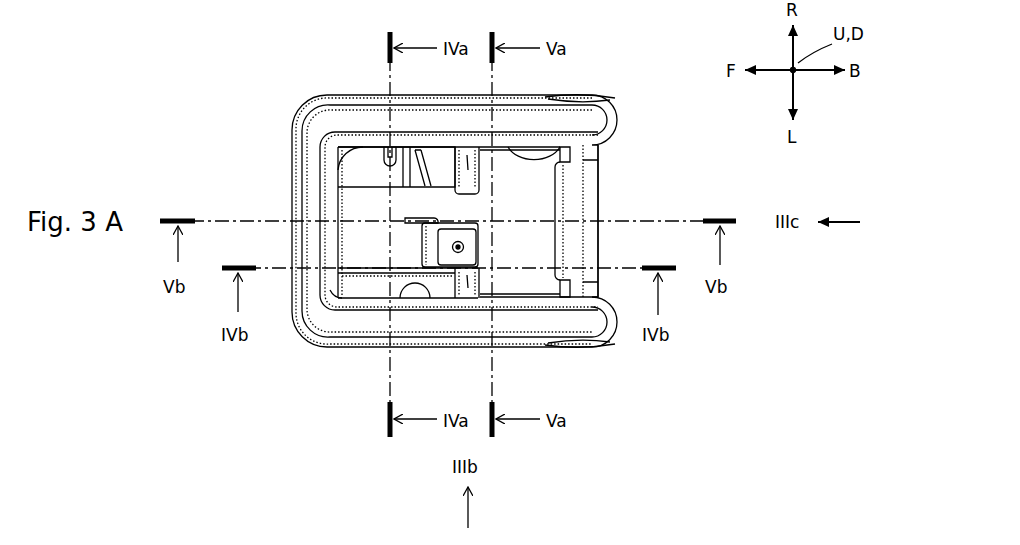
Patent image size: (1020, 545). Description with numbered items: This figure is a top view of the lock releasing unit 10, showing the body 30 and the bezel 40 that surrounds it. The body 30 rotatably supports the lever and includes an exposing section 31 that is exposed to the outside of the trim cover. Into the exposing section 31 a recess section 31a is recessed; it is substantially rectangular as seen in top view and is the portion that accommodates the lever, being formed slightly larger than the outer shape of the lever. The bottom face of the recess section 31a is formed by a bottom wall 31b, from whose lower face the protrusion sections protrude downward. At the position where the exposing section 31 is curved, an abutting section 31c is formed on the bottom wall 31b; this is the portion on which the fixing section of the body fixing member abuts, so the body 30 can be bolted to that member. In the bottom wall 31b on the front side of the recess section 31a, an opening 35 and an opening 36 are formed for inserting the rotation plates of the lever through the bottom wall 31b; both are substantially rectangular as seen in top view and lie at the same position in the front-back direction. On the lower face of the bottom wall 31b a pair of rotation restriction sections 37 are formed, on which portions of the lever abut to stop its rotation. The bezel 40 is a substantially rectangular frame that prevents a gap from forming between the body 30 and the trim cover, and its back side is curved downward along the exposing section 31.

The vehicle interior device / assembly 10 is at (204, 82).
The body 30 is at (649, 156).
The exposing section 31 is at (312, 164).
The recess section 31a is at (565, 153).
The bottom wall 31b is at (543, 238).
The abutting section 31c is at (568, 186).
The opening 35 is at (400, 298).
The opening 36 is at (367, 145).
The rotation restriction sections 37 is at (460, 145).
The bezel 40 is at (362, 346).